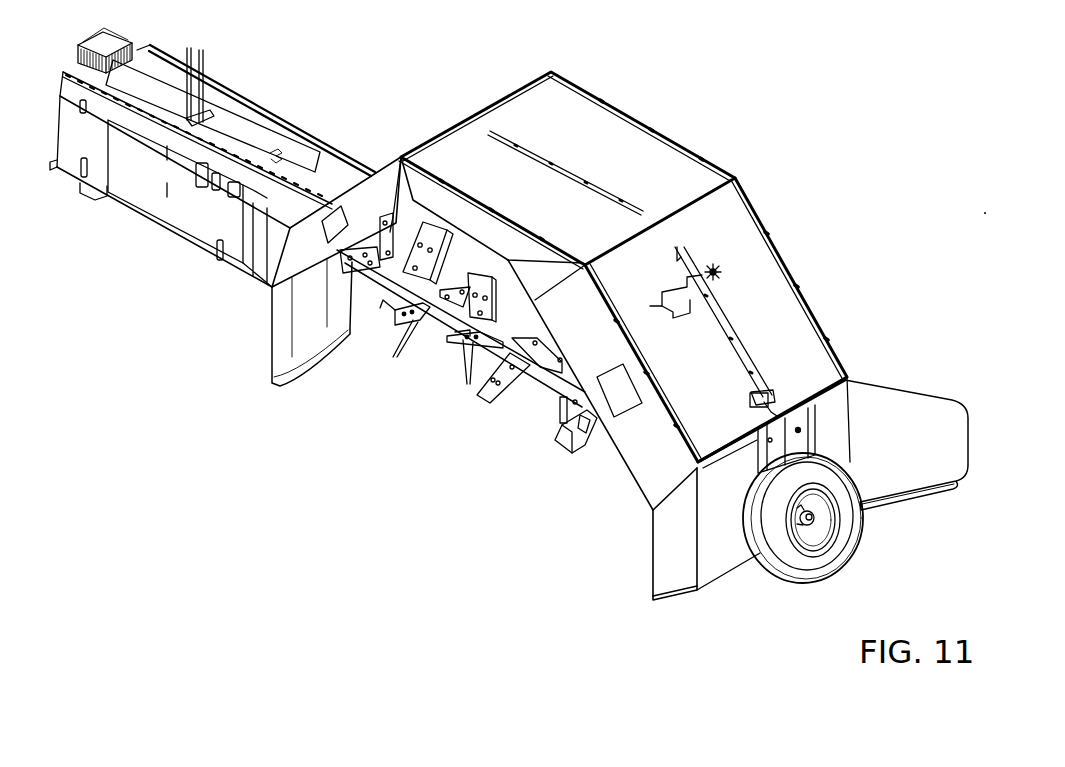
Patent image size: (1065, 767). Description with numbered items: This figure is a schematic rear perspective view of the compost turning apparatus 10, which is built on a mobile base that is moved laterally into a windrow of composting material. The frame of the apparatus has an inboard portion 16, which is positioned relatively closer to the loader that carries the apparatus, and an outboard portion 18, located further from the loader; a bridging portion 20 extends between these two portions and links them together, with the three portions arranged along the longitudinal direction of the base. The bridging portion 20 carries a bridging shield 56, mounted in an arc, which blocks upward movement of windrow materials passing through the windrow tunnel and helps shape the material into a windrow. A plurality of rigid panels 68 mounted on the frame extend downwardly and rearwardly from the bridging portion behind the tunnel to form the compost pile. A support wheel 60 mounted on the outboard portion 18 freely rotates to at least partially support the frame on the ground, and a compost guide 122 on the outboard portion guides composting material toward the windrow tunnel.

The compost turning apparatus 10 is at (808, 89).
The inboard portion 16 is at (86, 228).
The outboard portion 18 is at (638, 613).
The bridging portion 20 is at (778, 205).
The bridging shield 56 is at (772, 313).
The support wheel 60 is at (833, 553).
The panels 68 is at (388, 178).
The compost guide 122 is at (902, 474).